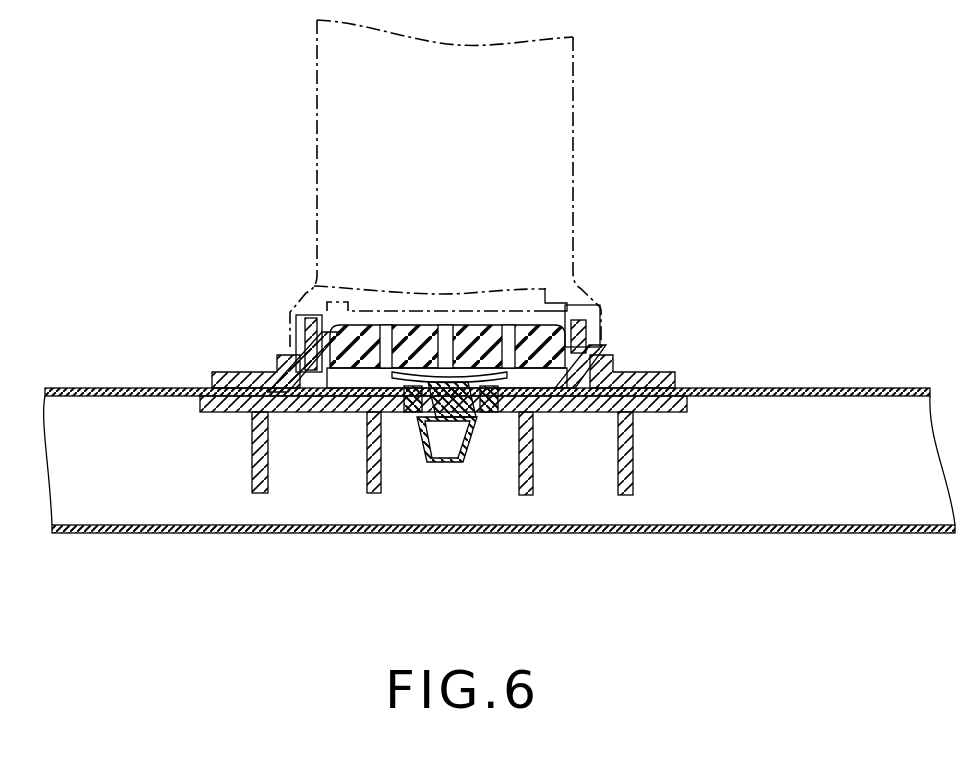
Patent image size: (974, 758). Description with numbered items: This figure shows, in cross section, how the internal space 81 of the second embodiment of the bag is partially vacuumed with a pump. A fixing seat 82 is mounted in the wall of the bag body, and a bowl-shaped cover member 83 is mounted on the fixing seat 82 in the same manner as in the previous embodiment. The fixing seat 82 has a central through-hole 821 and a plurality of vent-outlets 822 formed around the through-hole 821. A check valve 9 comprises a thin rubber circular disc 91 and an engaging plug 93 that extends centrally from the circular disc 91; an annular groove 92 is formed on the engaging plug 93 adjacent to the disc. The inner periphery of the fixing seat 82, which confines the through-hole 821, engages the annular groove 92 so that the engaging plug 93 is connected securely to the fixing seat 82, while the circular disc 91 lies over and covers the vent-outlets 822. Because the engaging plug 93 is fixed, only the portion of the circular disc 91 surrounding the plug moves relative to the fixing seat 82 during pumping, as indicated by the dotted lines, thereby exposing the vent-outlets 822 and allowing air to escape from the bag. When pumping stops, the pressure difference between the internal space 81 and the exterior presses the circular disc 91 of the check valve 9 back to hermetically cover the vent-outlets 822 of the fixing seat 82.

The internal space 81 is at (858, 418).
The fixing seat 82 is at (562, 417).
The bowl-shaped cover member 83 is at (540, 332).
The circular disc 91 is at (507, 381).
The through-hole 821 is at (415, 418).
The vent-outlets 822 is at (493, 413).
The annular groove 92 is at (417, 422).
The engaging plug 93 is at (448, 456).
The check valve 9 is at (417, 452).